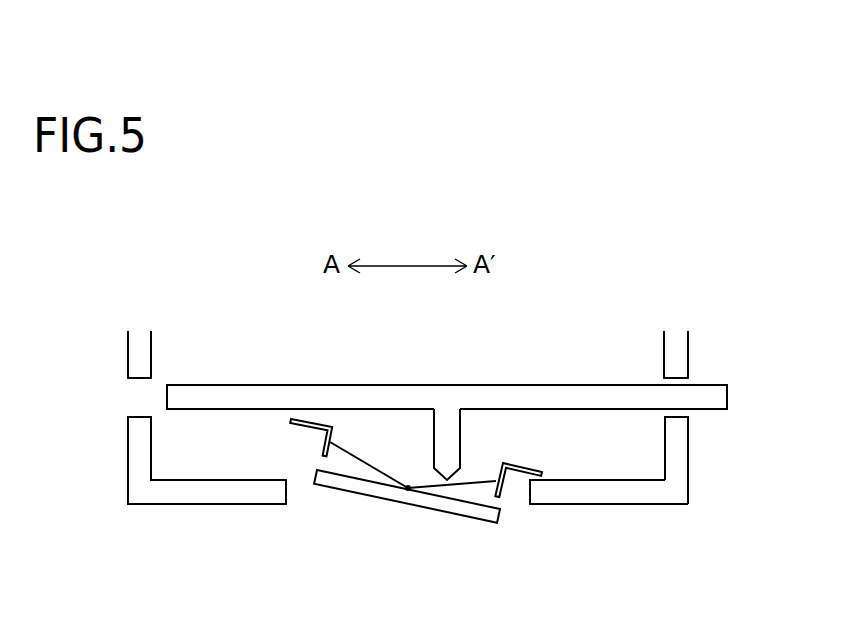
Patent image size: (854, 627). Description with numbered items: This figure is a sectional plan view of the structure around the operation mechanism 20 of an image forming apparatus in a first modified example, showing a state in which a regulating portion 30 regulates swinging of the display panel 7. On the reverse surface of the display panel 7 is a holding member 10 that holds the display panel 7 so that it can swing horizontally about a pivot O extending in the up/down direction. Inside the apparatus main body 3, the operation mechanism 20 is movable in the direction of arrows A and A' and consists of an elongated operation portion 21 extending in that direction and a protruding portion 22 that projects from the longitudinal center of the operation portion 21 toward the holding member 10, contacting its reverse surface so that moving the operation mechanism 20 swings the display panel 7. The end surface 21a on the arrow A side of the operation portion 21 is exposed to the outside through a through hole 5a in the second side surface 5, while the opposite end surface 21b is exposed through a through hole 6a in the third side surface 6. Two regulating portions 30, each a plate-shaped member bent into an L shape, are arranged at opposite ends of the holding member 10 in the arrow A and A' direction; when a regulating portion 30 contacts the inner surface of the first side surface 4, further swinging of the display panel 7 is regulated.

The apparatus main body 3 is at (713, 314).
The first side surface 4 is at (603, 492).
The second side surface 5 is at (140, 458).
The through hole 5a is at (140, 393).
The third side surface 6 is at (675, 456).
The through hole 6a is at (675, 381).
The display panel 7 is at (335, 482).
The holding member 10 is at (487, 497).
The operation mechanism 20 is at (355, 367).
The operation portion 21 is at (507, 400).
The end surface 21a is at (167, 400).
The end surface 21b is at (730, 397).
The protruding portion 22 is at (442, 437).
The regulating portion 30 is at (311, 432).
The pivot O is at (408, 492).